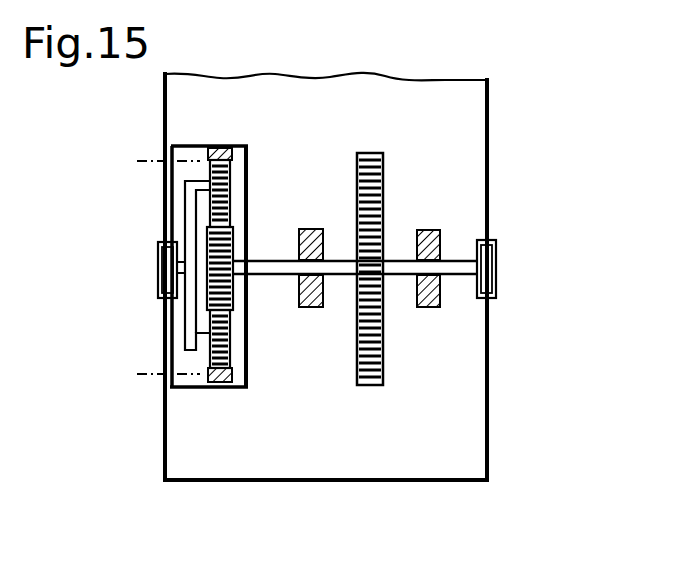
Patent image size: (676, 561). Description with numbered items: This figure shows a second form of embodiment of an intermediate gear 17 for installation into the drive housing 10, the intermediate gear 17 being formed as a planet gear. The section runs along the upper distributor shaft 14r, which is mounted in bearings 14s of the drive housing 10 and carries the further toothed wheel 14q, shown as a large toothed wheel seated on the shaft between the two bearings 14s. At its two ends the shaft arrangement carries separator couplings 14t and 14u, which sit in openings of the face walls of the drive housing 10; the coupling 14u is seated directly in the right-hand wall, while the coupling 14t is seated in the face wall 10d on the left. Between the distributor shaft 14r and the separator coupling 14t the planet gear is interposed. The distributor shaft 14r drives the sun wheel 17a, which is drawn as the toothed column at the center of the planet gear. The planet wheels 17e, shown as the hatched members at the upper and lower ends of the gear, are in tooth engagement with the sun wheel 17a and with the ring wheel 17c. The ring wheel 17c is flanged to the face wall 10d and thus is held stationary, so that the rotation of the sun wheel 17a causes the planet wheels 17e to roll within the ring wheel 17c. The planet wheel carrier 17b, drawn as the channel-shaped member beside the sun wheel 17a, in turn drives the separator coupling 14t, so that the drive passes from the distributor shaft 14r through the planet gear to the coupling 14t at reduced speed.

The drive housing 10 is at (402, 468).
The face wall 10d is at (165, 443).
The toothed wheel 14q is at (366, 152).
The upper distributor shaft 14r is at (399, 266).
The bearings 14s is at (307, 228).
The separator coupling 14t is at (158, 256).
The separator coupling 14u is at (493, 268).
The intermediate gear 17 is at (213, 148).
The sun wheel 17a is at (228, 283).
The planet wheel carrier 17b is at (185, 217).
The ring wheel 17c is at (224, 390).
The planet wheels 17e is at (207, 165).